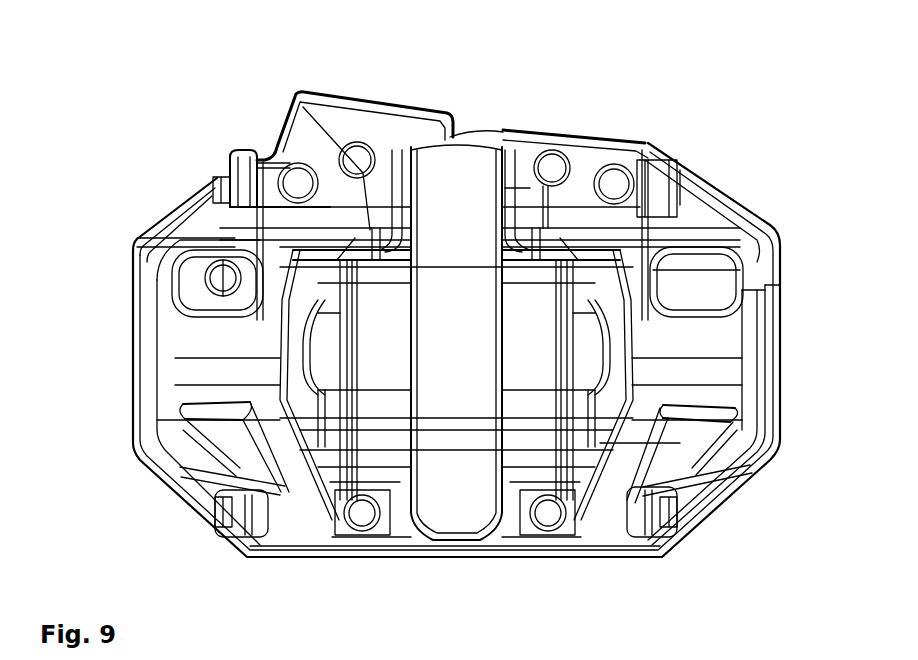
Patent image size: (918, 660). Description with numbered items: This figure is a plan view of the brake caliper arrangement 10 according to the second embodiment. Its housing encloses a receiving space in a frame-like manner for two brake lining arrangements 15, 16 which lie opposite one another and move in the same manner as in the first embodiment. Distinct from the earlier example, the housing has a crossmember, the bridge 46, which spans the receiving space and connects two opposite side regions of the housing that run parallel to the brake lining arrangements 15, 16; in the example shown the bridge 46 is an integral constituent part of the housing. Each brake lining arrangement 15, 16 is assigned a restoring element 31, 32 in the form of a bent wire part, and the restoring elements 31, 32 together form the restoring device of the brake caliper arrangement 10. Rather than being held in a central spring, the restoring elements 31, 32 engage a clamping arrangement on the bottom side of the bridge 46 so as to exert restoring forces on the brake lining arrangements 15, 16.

The brake caliper arrangement 10 is at (79, 193).
The brake lining arrangement 15 is at (540, 217).
The brake lining arrangement 16 is at (340, 530).
The restoring element 31 is at (310, 94).
The restoring element 32 is at (543, 510).
The bridge 46 is at (457, 193).